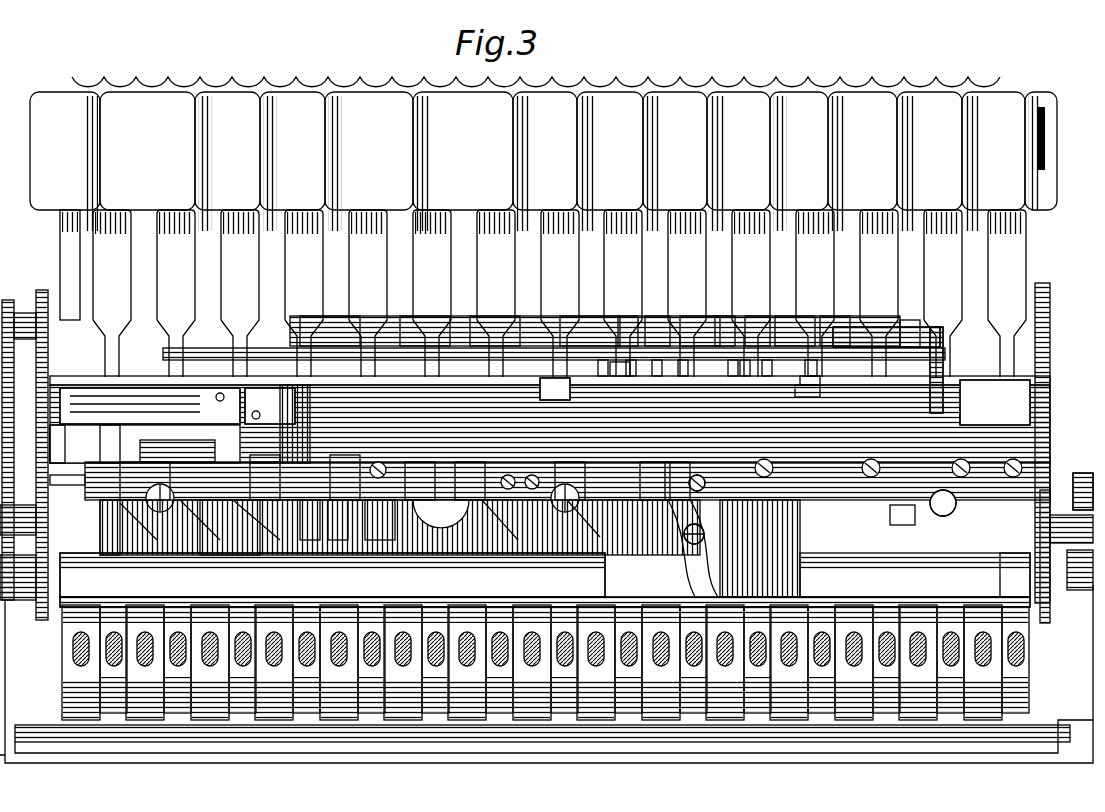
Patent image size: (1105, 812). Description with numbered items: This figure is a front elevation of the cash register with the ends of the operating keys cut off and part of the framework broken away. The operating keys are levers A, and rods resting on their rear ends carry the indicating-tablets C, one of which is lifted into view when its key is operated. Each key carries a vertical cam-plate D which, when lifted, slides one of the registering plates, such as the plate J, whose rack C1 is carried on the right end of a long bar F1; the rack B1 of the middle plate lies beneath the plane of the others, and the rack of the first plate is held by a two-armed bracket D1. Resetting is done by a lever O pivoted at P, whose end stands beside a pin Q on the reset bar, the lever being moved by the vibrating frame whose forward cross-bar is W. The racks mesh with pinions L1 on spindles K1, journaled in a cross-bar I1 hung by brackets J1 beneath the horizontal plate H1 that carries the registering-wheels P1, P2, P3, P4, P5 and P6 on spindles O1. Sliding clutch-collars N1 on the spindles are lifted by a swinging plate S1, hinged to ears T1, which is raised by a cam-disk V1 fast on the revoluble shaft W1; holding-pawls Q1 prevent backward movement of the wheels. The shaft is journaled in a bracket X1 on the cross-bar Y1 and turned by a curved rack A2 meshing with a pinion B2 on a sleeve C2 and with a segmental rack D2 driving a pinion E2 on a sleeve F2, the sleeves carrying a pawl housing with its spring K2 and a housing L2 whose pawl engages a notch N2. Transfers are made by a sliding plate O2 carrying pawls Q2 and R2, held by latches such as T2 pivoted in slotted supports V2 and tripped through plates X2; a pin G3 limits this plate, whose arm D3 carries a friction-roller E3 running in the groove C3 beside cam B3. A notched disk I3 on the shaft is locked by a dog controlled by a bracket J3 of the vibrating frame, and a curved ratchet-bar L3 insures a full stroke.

The indicating-tablets C is at (50, 217).
The key-levers A is at (1045, 662).
The sixth registering-wheel P6 is at (331, 316).
The fifth registering-wheel P5 is at (425, 316).
The fourth registering-wheel P4 is at (492, 316).
The third registering-wheel P3 is at (586, 316).
The second registering-wheel P2 is at (690, 316).
The primary registering-wheel P1 is at (780, 316).
The slotted supports V2 is at (726, 316).
The laterally-projecting plate X2 is at (754, 316).
The sliding plate O2 is at (808, 346).
The spindles K1 is at (855, 350).
The pin G3 is at (910, 320).
The arm D3 is at (944, 350).
The holding-pawls Q1 is at (600, 359).
The pawl R2 is at (632, 358).
The swinging plate S1 is at (657, 358).
The pin Q is at (682, 358).
The sliding clutch-collar N1 is at (661, 361).
The cam-disk V1 is at (747, 439).
The pawl Q2 is at (768, 359).
The curved ratchet-bar L3 is at (812, 358).
The spindle O1 is at (811, 372).
The latch T2 is at (807, 389).
The notch N2 is at (738, 368).
The ears T1 is at (555, 389).
The horizontal plate H1 is at (205, 360).
The bracket X1 is at (239, 434).
The segmental rack D2 is at (295, 424).
The sliding plate J is at (59, 444).
The cross-bar Y1 is at (118, 425).
The long bar F1 is at (67, 482).
The revoluble shaft W1 is at (326, 479).
The pinion E2 is at (265, 480).
The housing L2 is at (265, 460).
The pinion B2 is at (345, 476).
The brackets J1 is at (420, 481).
The cross-bar I1 is at (643, 480).
The rack C1 is at (570, 479).
The rack B1 is at (678, 480).
The pinions L1 is at (677, 479).
The friction-roller E3 is at (995, 402).
The cam B3 is at (935, 500).
The cam-groove C3 is at (902, 508).
The bracket J3 is at (1015, 575).
The notched disk I3 is at (1074, 489).
The vertical plate D is at (100, 518).
The sleeve F2 is at (230, 527).
The curved rack A2 is at (309, 520).
The sleeve C2 is at (338, 520).
The spring K2 is at (380, 520).
The lever O is at (708, 496).
The pivot P is at (705, 534).
The cross-bar W is at (332, 575).
The two-armed bracket D1 is at (722, 600).